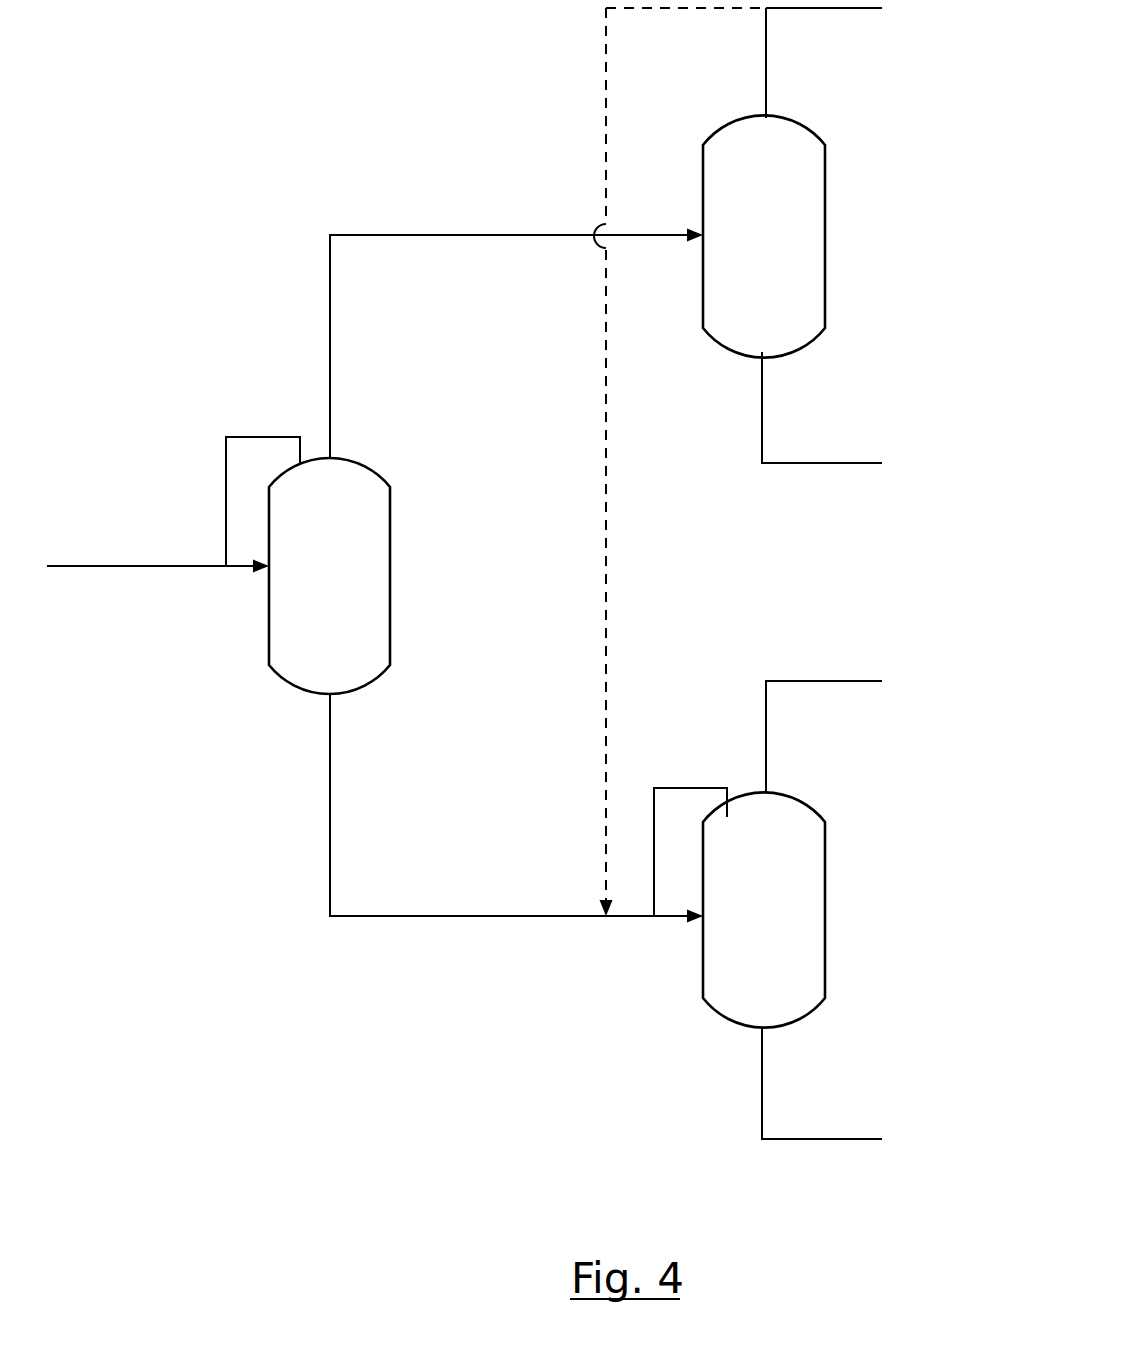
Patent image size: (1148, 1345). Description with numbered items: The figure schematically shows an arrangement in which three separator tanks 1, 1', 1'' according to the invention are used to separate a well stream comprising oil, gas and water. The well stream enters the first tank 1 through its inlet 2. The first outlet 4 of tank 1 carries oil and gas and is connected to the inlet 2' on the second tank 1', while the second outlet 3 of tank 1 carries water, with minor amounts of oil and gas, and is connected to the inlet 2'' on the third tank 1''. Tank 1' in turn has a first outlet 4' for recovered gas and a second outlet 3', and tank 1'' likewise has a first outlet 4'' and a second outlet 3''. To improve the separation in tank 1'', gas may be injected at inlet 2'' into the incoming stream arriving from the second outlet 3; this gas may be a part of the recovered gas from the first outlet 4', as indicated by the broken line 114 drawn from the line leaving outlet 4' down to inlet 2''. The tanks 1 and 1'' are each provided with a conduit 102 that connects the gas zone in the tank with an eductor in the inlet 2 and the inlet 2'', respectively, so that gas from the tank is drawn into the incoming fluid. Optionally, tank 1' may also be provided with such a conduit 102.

The separator tank 1 is at (381, 576).
The separator tank 1' is at (822, 236).
The separator tank 1'' is at (813, 909).
The inlet 2 is at (158, 506).
The inlet 2' is at (650, 189).
The inlet 2'' is at (630, 852).
The second outlet 3 is at (516, 809).
The second outlet 3' is at (822, 407).
The second outlet 3'' is at (822, 1083).
The first outlet 4 is at (516, 344).
The first outlet 4' is at (824, 63).
The first outlet 4'' is at (824, 737).
The conduit 102 is at (255, 437).
The broken line 114 is at (607, 449).